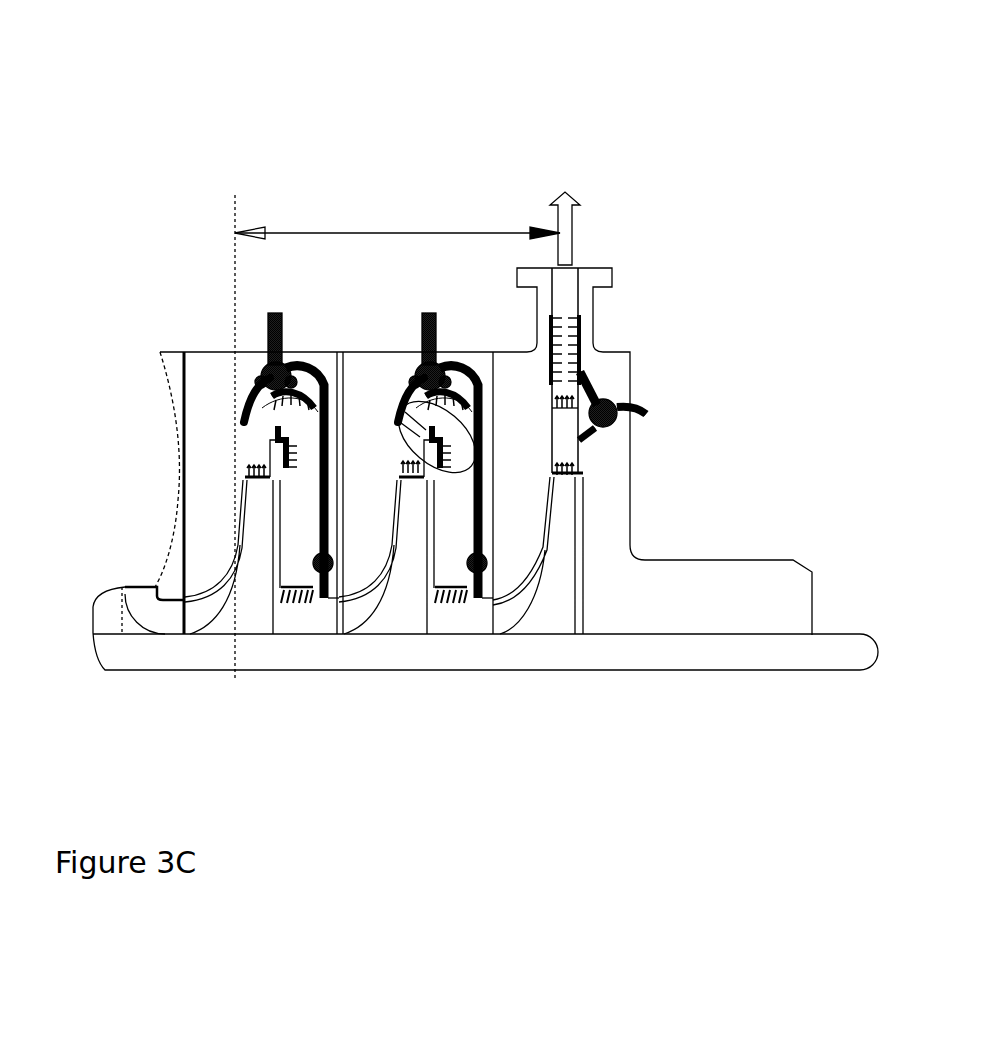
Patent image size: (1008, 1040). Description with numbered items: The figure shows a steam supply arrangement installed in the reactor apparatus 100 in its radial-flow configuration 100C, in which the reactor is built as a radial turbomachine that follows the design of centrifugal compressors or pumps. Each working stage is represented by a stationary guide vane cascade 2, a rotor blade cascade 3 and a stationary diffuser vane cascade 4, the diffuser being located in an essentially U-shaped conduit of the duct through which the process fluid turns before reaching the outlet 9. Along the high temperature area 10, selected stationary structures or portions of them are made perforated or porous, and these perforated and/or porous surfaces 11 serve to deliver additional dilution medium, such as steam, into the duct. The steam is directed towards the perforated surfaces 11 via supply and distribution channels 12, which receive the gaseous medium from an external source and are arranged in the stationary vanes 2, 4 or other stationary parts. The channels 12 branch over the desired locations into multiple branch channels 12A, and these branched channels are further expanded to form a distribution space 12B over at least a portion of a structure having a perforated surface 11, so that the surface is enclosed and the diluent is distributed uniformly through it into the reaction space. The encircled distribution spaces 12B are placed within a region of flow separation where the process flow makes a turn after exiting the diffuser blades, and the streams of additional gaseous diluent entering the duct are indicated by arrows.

The reactor apparatus 100 is at (850, 53).
The reactor apparatus (radial-flow configuration) 100C is at (485, 349).
The stationary guide vane cascade 2 is at (155, 617).
The rotor blade cascade 3 is at (243, 580).
The stationary diffuser vane cascade 4 is at (253, 450).
The outlet 9 is at (579, 332).
The high temperature area 10 is at (397, 437).
The perforated and/or porous surfaces 11 is at (280, 457).
The supply and distribution channels 12 is at (420, 337).
The branch channels 12A is at (270, 405).
The distribution space 12B is at (480, 430).